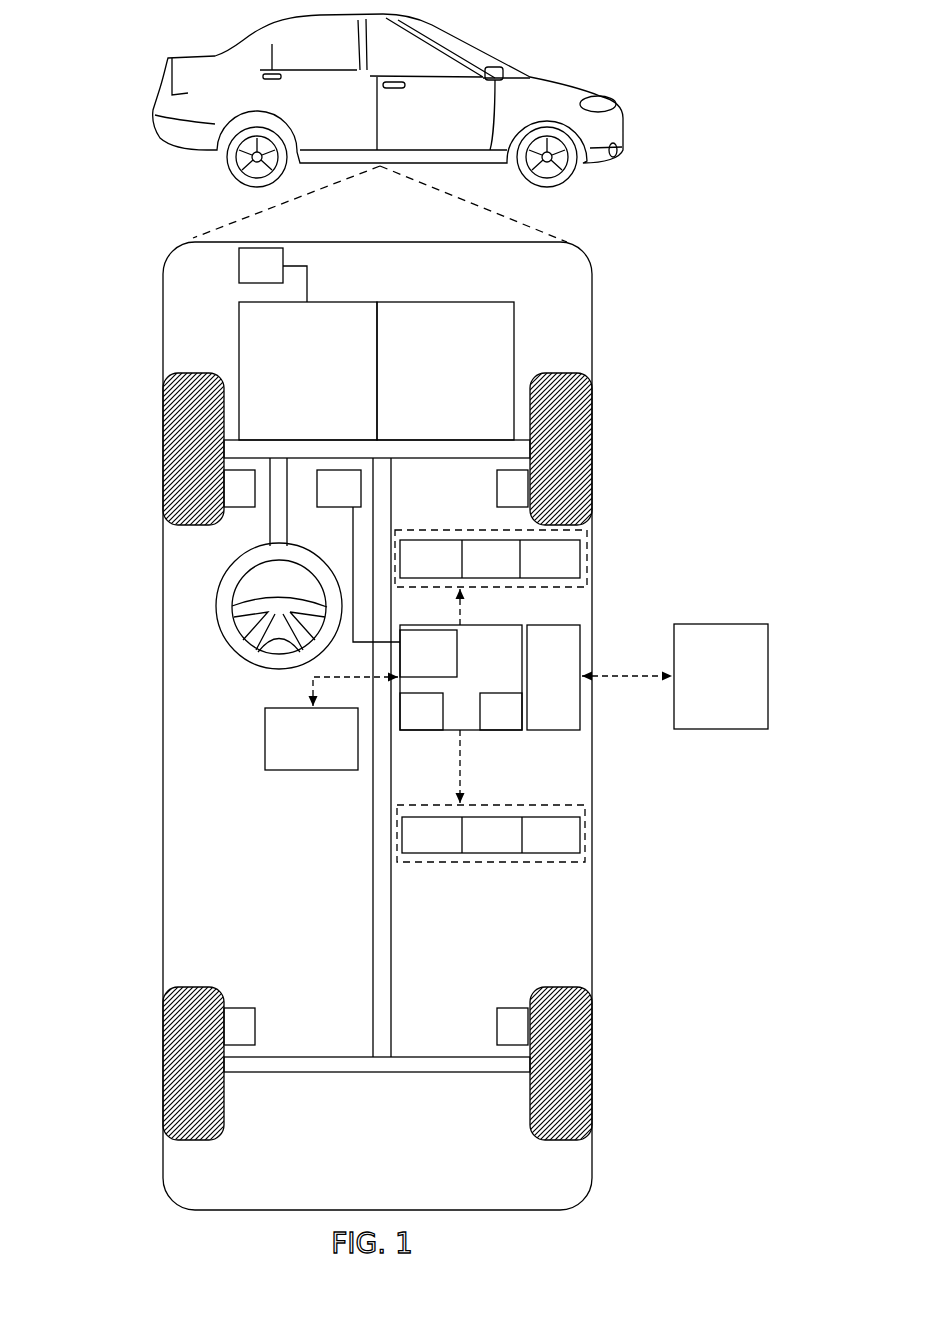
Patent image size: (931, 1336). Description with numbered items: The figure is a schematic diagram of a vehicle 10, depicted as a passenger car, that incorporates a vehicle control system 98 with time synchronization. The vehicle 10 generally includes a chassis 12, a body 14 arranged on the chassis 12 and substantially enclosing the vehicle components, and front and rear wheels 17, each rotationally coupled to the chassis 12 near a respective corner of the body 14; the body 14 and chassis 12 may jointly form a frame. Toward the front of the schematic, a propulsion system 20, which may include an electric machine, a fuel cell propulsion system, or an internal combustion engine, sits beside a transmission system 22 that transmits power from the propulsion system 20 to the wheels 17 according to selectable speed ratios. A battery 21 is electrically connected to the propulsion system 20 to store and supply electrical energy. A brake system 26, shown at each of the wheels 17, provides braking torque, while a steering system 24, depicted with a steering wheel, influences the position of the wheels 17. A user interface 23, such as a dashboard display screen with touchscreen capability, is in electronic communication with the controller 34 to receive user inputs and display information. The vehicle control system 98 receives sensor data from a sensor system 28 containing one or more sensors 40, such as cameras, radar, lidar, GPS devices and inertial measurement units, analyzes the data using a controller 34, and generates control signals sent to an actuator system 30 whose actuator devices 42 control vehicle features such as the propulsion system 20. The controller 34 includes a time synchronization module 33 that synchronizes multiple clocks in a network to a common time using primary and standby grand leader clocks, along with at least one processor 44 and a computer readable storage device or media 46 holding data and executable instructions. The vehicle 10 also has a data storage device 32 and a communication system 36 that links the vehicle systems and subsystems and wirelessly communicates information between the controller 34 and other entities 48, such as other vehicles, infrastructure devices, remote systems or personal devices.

The vehicle 10 is at (162, 88).
The vehicle control system 98 is at (618, 254).
The body 14 is at (163, 795).
The front and rear wheels 17 is at (193, 373).
The battery 21 is at (245, 248).
The propulsion system 20 is at (295, 384).
The transmission system 22 is at (432, 384).
The brake system 26 is at (226, 502).
The user interface 23 is at (325, 502).
The steering system 24 is at (297, 523).
The chassis 12 is at (373, 935).
The sensor system 28 is at (470, 530).
The sensors 40 is at (417, 573).
The controller 34 is at (473, 669).
The time synchronization module 33 is at (414, 669).
The processor 44 is at (407, 725).
The computer readable storage device or media 46 is at (487, 725).
The communication system 36 is at (539, 691).
The data storage device 32 is at (297, 752).
The actuator system 30 is at (522, 862).
The actuator devices 42 is at (418, 849).
The other entities 48 is at (707, 690).